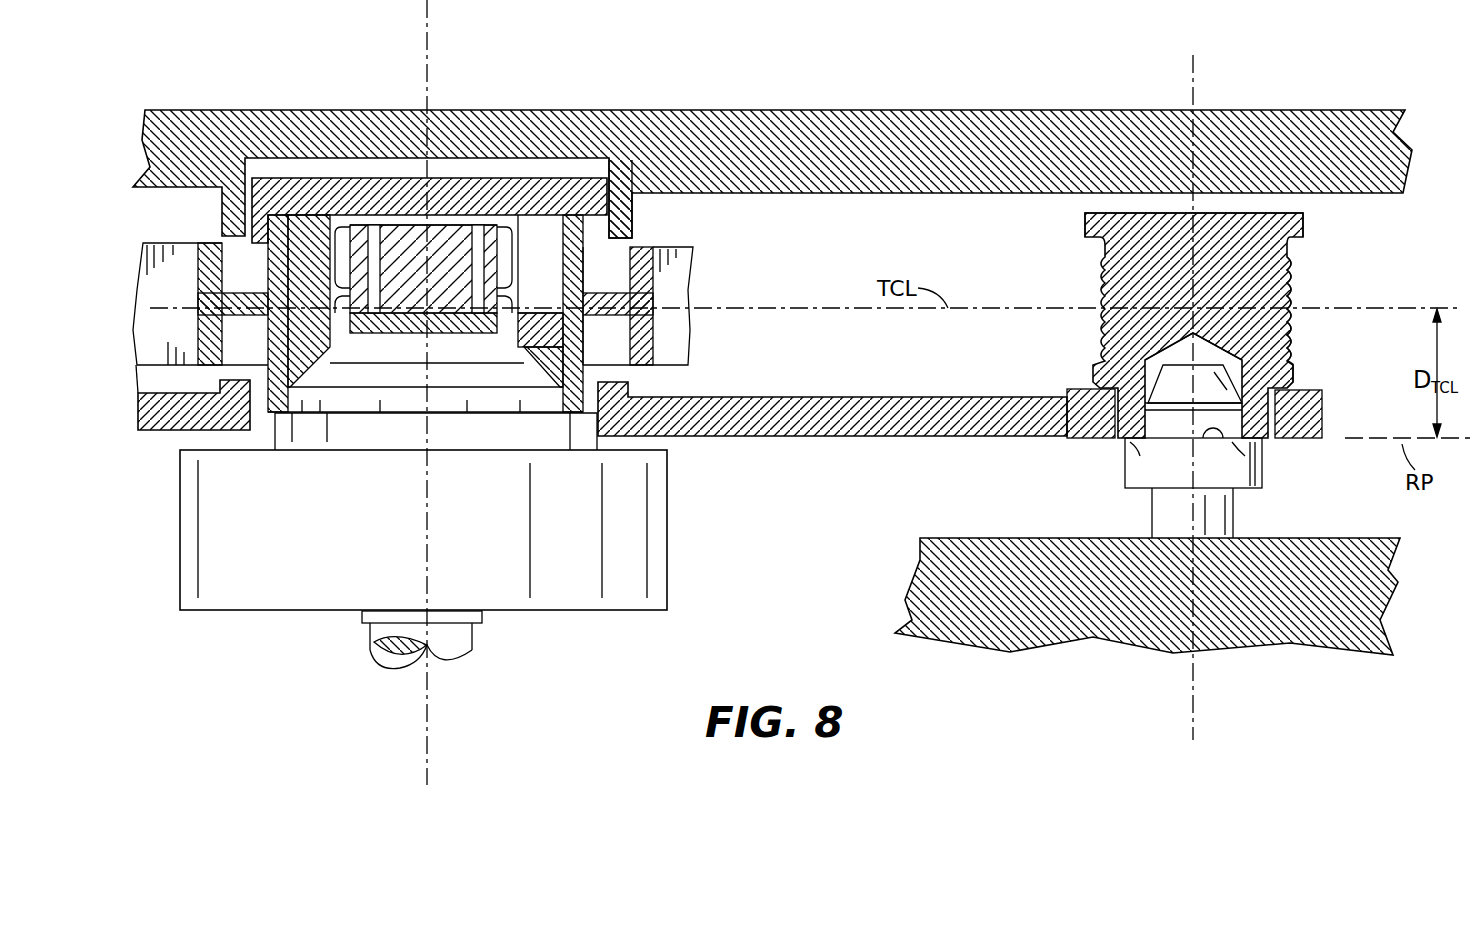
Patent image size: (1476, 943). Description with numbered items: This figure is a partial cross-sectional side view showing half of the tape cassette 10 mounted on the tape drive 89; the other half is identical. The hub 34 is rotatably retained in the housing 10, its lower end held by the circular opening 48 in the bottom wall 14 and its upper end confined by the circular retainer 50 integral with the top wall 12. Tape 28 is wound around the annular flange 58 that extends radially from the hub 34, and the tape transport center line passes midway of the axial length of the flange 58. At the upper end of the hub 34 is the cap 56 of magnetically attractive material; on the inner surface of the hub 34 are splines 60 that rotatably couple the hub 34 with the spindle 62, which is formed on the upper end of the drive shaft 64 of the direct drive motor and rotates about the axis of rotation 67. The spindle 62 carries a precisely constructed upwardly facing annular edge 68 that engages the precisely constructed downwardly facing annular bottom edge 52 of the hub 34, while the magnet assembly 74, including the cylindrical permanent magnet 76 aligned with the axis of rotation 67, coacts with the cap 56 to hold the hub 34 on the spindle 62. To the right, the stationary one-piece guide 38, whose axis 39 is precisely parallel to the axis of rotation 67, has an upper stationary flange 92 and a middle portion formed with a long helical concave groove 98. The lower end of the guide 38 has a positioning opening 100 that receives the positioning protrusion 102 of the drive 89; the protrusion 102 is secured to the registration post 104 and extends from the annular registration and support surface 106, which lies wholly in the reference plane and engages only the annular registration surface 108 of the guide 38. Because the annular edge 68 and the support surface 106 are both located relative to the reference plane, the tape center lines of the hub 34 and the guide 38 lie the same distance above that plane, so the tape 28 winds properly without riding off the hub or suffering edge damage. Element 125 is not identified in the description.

The cartridge housing 10 is at (204, 92).
The top wall 12 is at (853, 128).
The bottom wall 14 is at (848, 436).
The tape 28 is at (163, 312).
The hub 34 is at (654, 294).
The guide 38 is at (1090, 226).
The axis 39 is at (1200, 88).
The circular opening 48 is at (585, 423).
The circular retainer 50 is at (633, 206).
The annular bottom edge 52 is at (562, 427).
The cap 56 is at (337, 200).
The annular flange 58 is at (655, 323).
The splines 60 is at (300, 236).
The spindle 62 is at (179, 574).
The drive shaft 64 is at (455, 645).
The axis of rotation 67 is at (420, 695).
The annular edge 68 is at (378, 387).
The magnet assembly 74 is at (473, 215).
The magnet 76 is at (418, 287).
The tape drive 89 is at (998, 547).
The upper stationary flange 92 is at (1305, 228).
The helical concave groove 98 is at (1307, 281).
The positioning opening 100 is at (1190, 352).
The positioning protrusion 102 is at (1293, 358).
The registration post 104 is at (1242, 480).
The annular registration and support surface 106 is at (1233, 435).
The annular registration surface 108 is at (1140, 445).
The spacer block 125 is at (1080, 388).